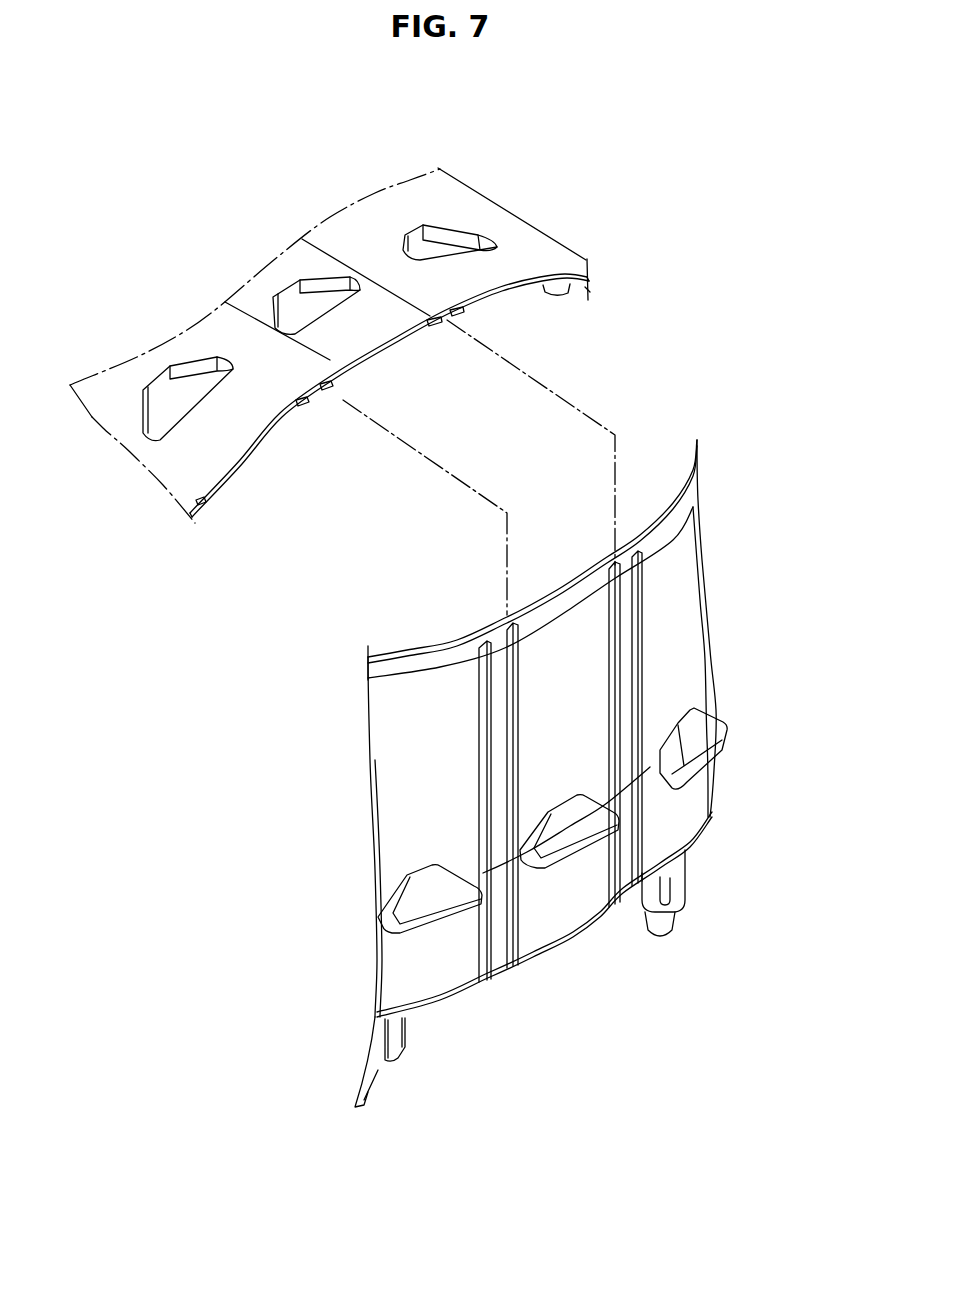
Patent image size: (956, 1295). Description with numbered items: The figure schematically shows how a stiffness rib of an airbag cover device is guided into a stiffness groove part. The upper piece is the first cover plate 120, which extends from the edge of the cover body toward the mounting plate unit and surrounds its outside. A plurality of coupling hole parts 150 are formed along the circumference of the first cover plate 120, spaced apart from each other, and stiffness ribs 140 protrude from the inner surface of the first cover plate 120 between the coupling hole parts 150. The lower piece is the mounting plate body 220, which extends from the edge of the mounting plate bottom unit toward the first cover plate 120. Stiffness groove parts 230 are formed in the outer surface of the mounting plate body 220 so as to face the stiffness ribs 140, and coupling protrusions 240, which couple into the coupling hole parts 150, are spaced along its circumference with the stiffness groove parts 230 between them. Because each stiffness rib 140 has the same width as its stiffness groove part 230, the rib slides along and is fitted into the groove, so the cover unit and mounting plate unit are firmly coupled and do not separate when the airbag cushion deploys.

The first cover plate 120 is at (372, 240).
The coupling hole part 150 is at (318, 283).
The stiffness rib 140 is at (452, 318).
The mounting plate body 220 is at (570, 673).
The stiffness groove part 230 is at (640, 602).
The coupling protrusion 240 is at (573, 827).